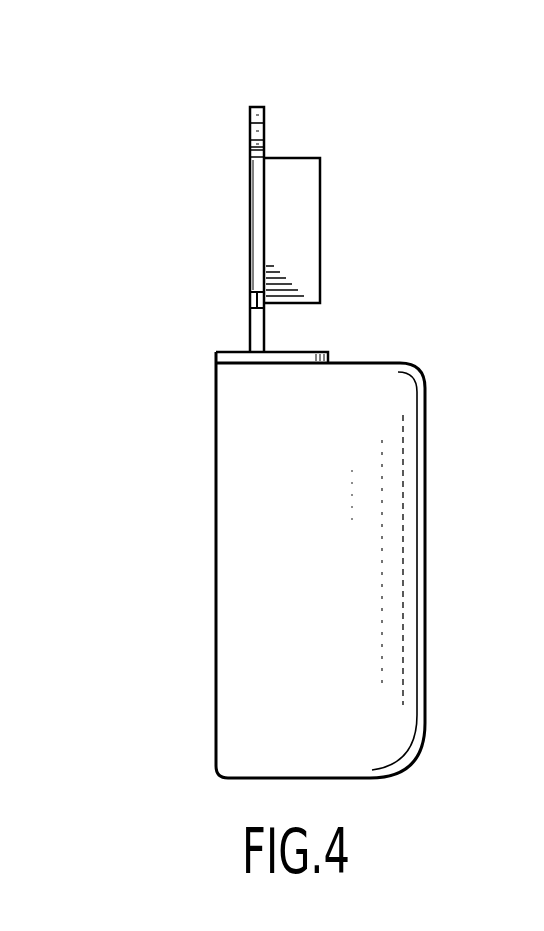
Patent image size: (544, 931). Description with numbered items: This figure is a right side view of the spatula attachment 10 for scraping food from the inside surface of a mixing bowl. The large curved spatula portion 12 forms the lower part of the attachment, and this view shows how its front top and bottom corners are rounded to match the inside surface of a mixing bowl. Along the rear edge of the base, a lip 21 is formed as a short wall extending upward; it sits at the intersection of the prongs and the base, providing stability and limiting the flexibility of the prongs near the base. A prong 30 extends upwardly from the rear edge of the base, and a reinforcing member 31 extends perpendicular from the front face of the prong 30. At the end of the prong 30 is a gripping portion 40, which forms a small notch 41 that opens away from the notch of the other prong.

The spatula attachment 10 is at (125, 397).
The spatula portion 12 is at (403, 495).
The lip 21 is at (330, 352).
The prong 30 is at (250, 262).
The reinforcing member 31 is at (321, 218).
The gripping portion 40 is at (256, 106).
The notch 41 is at (250, 135).